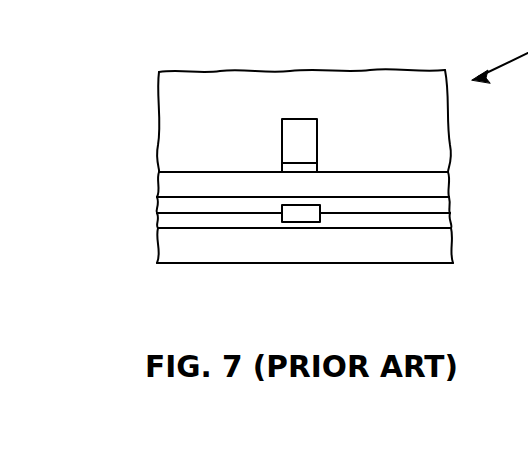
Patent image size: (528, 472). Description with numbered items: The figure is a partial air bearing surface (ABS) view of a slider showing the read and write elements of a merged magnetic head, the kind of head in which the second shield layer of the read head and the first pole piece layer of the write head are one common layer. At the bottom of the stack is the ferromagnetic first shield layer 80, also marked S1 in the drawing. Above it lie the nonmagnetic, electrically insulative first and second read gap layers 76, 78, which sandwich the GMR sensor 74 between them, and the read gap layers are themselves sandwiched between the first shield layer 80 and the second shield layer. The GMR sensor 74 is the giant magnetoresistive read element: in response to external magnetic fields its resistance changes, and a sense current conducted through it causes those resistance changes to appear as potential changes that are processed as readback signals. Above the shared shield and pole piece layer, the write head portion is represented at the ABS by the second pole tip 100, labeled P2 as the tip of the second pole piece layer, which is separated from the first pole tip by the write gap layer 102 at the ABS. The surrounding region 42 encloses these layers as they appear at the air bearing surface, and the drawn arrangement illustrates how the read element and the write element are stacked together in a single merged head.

The upper dielectric/substrate region 42 is at (175, 92).
The first read gap layer 76 is at (193, 230).
The second read gap layer 78 is at (414, 205).
The GMR sensor 74 is at (302, 212).
The first shield layer 80 is at (438, 245).
The second pole tip 100 is at (300, 122).
The write gap layer 102 is at (295, 163).
The second polysilicon layer P2 is at (307, 132).
The substrate S1 is at (345, 247).